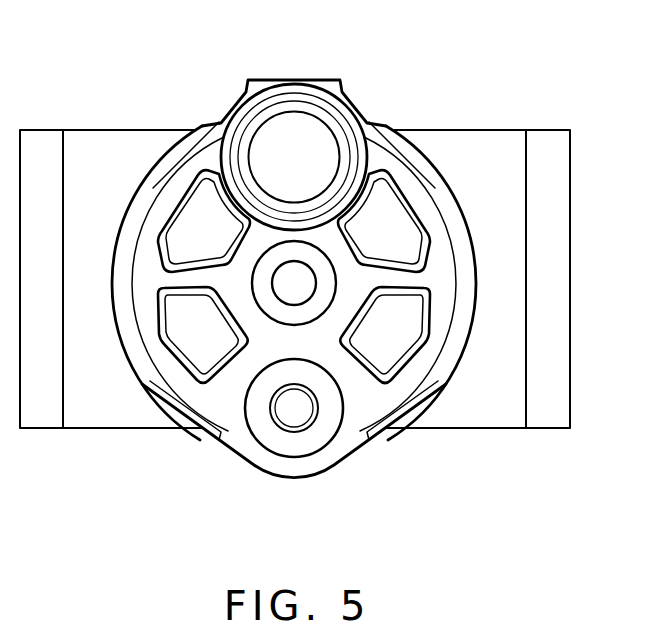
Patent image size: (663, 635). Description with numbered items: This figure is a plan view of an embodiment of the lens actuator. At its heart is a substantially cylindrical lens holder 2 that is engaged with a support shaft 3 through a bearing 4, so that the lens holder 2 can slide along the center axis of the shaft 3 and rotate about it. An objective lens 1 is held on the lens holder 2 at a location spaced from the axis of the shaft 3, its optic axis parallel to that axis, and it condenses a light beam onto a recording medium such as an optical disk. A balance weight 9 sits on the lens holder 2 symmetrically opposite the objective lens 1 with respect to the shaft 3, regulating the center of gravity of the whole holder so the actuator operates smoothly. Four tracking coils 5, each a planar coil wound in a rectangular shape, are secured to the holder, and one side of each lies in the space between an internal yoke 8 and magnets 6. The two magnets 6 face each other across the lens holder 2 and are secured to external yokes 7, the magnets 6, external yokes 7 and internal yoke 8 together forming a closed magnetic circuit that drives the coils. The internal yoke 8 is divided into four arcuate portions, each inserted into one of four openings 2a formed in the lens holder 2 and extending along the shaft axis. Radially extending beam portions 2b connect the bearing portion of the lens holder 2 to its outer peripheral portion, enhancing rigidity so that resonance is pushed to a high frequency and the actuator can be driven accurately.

The objective lens 1 is at (300, 127).
The lens holder 2 is at (240, 383).
The openings 2a is at (183, 220).
The beam portions 2b is at (167, 283).
The support shaft 3 is at (287, 290).
The bearing 4 is at (310, 308).
The tracking coils 5 is at (217, 123).
The magnets 6 is at (119, 143).
The external yokes 7 is at (43, 413).
The internal yoke 8 is at (177, 243).
The balance weight 9 is at (303, 414).